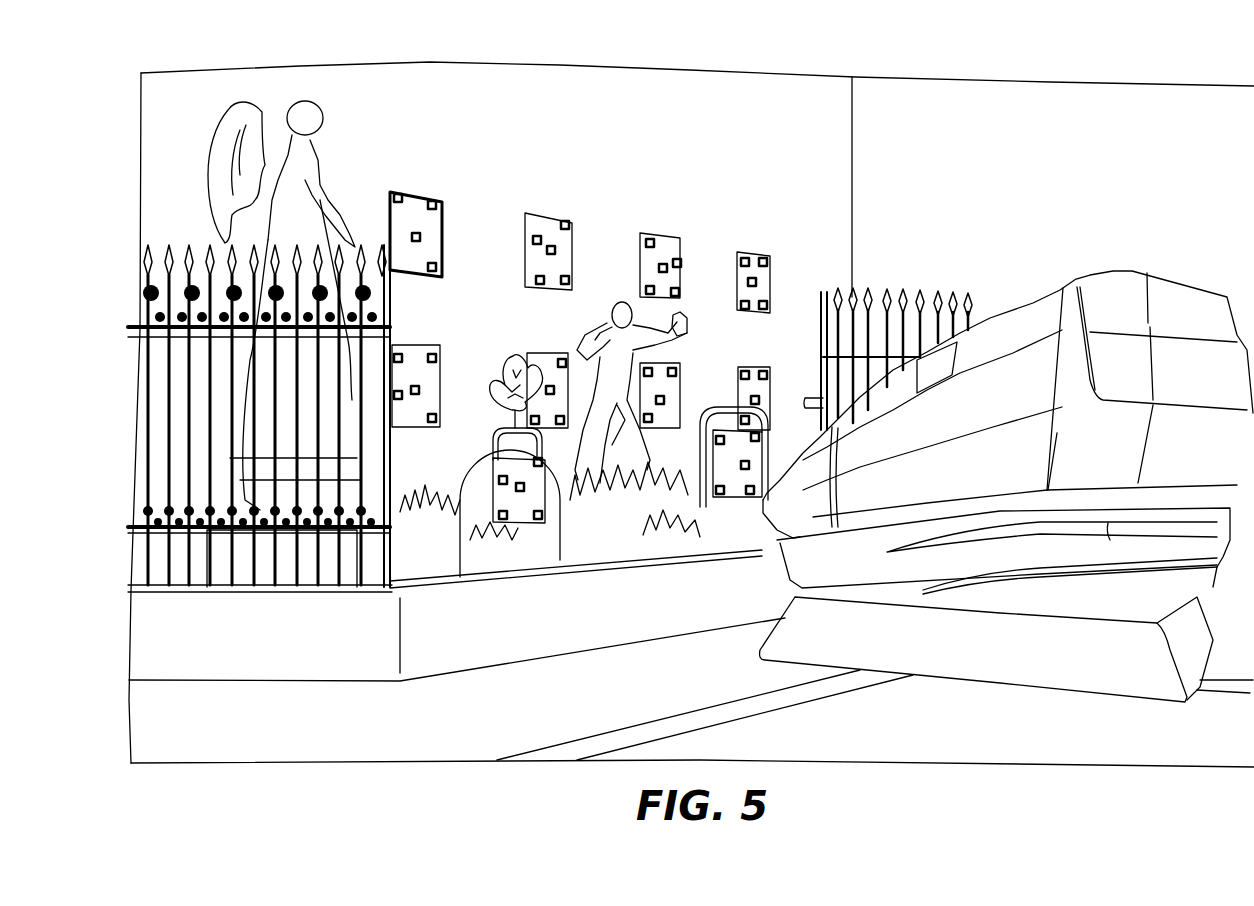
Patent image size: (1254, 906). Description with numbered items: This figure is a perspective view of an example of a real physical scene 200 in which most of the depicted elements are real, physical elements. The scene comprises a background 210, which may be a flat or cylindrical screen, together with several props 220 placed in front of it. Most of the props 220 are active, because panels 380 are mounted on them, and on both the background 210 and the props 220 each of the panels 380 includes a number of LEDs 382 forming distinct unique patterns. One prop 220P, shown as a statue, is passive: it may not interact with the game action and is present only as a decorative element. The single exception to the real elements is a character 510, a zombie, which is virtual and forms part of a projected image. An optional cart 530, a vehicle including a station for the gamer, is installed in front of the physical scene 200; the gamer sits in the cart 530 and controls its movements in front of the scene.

The physical scene 200 is at (930, 52).
The background 210 is at (785, 193).
The props 220 is at (463, 500).
The passive prop 220P is at (252, 340).
The panels 380 is at (443, 227).
The LEDs 382 is at (393, 192).
The character (zombie) 510 is at (647, 500).
The cart 530 is at (1018, 472).